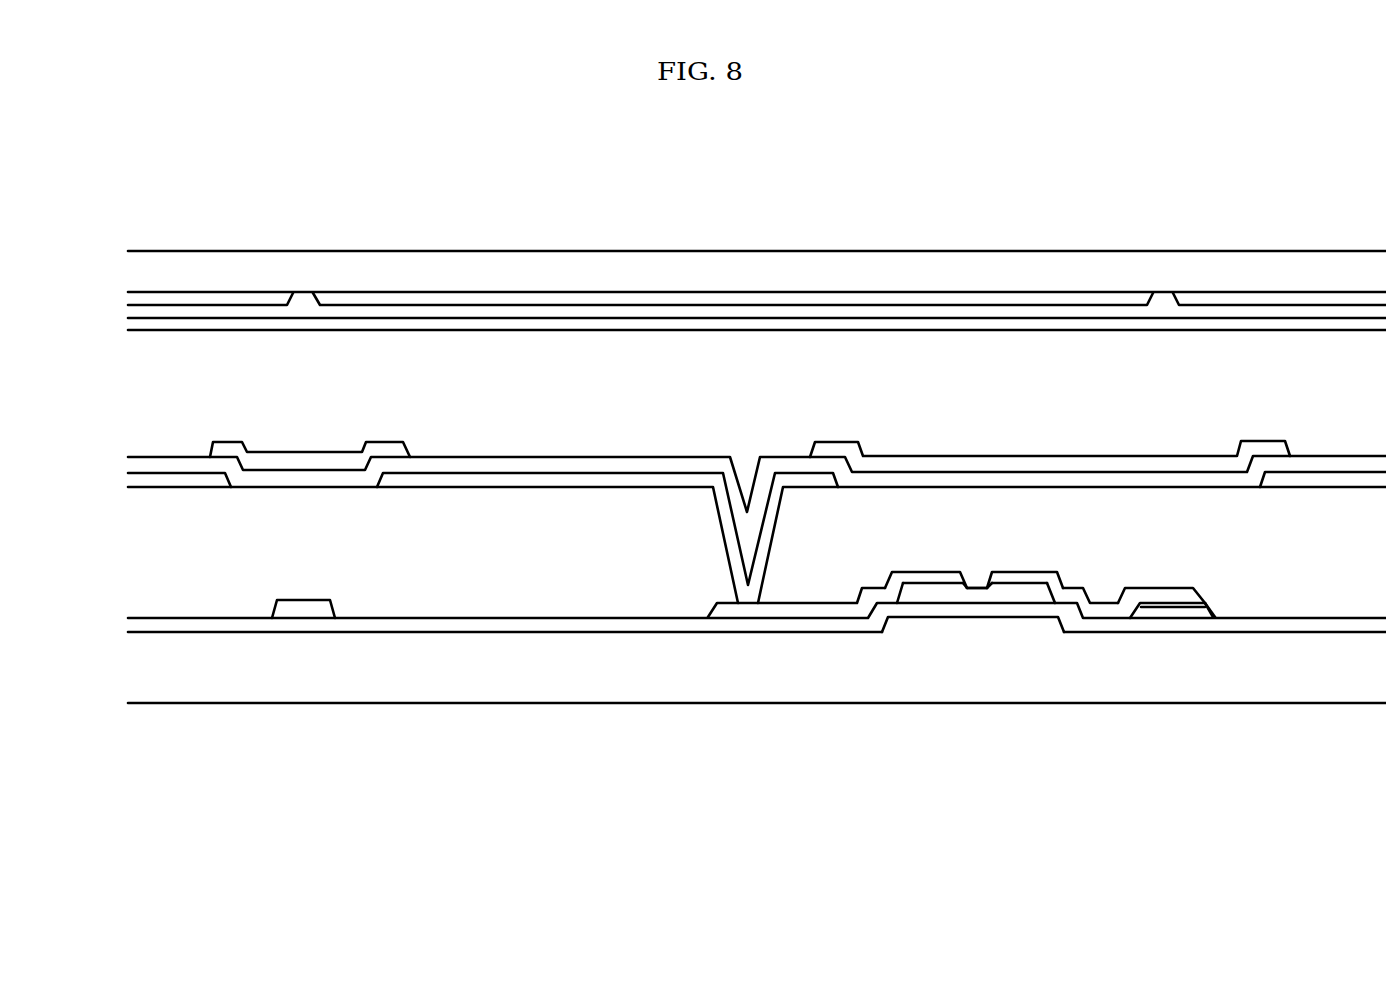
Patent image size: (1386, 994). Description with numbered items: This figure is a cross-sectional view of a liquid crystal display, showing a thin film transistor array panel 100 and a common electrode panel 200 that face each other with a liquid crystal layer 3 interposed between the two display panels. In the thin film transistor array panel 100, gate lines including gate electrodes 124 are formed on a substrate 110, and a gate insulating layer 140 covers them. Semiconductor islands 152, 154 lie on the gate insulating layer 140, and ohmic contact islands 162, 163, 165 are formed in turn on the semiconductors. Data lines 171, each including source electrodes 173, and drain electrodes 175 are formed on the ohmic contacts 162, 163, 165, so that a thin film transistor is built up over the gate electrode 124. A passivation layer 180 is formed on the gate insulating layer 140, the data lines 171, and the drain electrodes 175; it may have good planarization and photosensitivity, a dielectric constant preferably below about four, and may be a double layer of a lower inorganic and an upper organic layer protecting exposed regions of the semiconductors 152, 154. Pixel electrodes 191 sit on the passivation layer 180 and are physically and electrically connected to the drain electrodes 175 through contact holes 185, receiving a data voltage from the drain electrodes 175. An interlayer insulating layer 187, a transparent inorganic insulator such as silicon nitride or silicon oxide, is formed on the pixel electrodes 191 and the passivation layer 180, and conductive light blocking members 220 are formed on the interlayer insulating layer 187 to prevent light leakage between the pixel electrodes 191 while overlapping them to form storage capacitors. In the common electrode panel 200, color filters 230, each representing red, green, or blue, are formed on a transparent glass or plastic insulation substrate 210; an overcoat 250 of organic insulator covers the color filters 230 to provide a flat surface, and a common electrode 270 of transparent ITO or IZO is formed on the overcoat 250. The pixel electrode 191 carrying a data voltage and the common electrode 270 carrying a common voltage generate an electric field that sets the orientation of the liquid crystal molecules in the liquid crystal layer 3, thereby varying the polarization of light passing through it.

The common electrode panel 200 is at (110, 250).
The insulation substrate 210 is at (418, 270).
The color filters 230 is at (215, 297).
The overcoat 250 is at (580, 307).
The common electrode 270 is at (940, 318).
The liquid crystal layer 3 is at (110, 333).
The thin film transistor array panel 100 is at (110, 458).
The substrate 110 is at (537, 690).
The gate electrodes 124 is at (990, 626).
The gate insulating layer 140 is at (656, 625).
The semiconductor island 152 is at (1185, 625).
The semiconductor island 154 is at (1012, 598).
The ohmic contact island 162 is at (1203, 600).
The ohmic contact island 163 is at (1043, 598).
The ohmic contact island 165 is at (920, 585).
The data lines 171 is at (303, 612).
The source electrodes 173 is at (1023, 580).
The drain electrodes 175 is at (945, 585).
The passivation layer 180 is at (782, 600).
The contact holes 185 is at (720, 518).
The interlayer insulating layer 187 is at (455, 464).
The pixel electrodes 191 is at (165, 480).
The light blocking members 220 is at (272, 462).